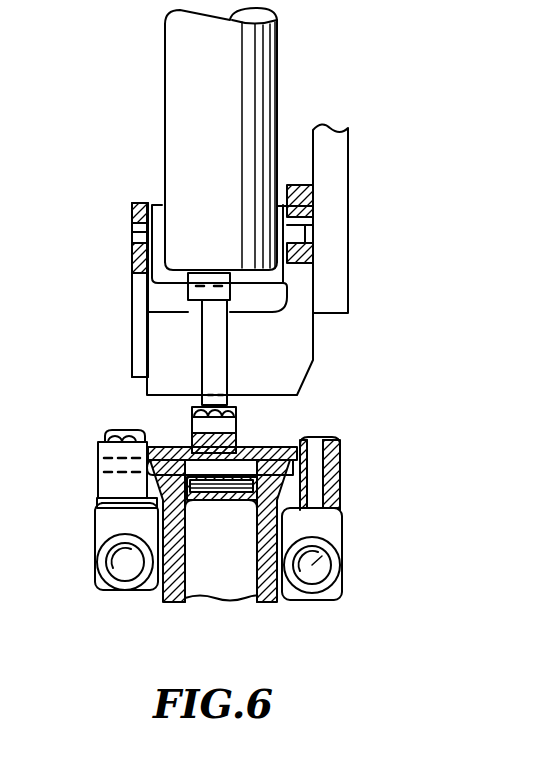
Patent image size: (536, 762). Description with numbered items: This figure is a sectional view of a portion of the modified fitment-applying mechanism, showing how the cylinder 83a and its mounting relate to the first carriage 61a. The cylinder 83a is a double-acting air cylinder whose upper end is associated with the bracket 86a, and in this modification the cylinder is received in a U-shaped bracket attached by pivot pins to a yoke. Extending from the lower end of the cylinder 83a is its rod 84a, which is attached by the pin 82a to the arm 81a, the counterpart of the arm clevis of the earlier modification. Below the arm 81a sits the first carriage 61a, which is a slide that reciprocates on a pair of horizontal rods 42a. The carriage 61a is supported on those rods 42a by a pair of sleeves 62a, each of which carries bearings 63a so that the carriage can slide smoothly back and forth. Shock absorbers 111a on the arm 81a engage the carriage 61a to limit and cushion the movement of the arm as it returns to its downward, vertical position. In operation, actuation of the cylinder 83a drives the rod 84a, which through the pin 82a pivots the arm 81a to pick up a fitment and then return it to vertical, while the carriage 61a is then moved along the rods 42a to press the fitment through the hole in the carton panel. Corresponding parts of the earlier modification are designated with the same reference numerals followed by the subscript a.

The cylinder 83a is at (226, 122).
The bracket 86a is at (338, 203).
The rod 84a is at (228, 362).
The pin 82a is at (170, 447).
The shock absorbers 111a is at (115, 495).
The first carriage 61a is at (350, 498).
The arm 81a is at (273, 602).
The sleeves 62a is at (97, 518).
The rods 42a is at (104, 553).
The bearings 63a is at (108, 590).